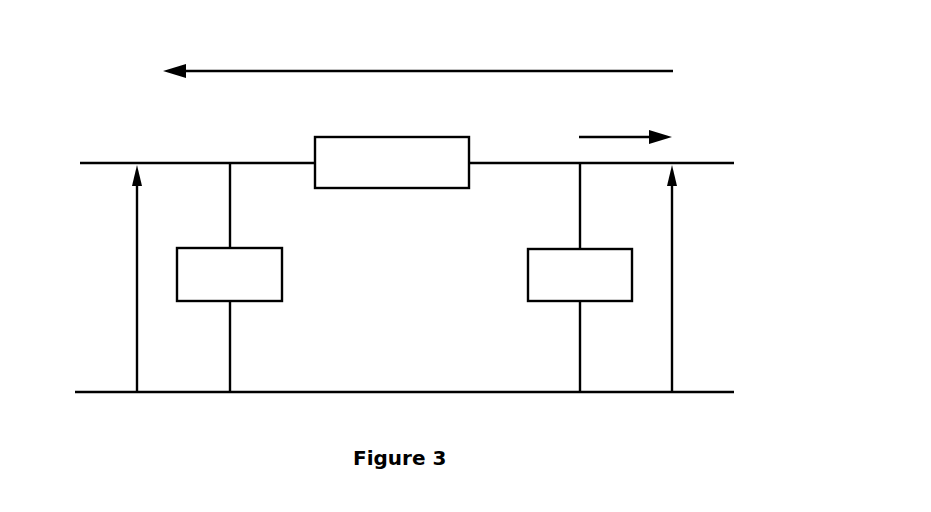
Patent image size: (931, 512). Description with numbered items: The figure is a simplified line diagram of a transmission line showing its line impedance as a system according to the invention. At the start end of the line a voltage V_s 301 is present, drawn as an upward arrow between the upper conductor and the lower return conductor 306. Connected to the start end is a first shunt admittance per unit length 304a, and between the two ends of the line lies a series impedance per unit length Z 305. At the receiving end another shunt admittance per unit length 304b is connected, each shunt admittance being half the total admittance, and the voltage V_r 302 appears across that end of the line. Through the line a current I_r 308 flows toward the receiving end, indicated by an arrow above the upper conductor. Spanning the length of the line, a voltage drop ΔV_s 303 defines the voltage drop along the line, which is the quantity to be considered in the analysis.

The voltage V_s 301 is at (137, 258).
The voltage V_r 302 is at (672, 255).
The voltage drop ΔV_s 303 is at (220, 71).
The shunt admittance per unit length Y/2 304a is at (282, 282).
The shunt admittance per unit length Y/2 304b is at (528, 272).
The series impedance per unit length Z 305 is at (316, 147).
The return conductor / reference line 306 is at (330, 392).
The current I_r 308 is at (648, 132).